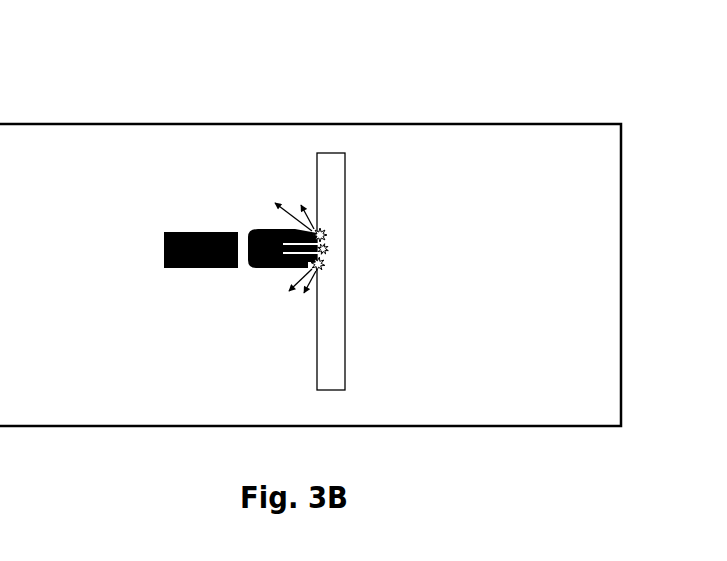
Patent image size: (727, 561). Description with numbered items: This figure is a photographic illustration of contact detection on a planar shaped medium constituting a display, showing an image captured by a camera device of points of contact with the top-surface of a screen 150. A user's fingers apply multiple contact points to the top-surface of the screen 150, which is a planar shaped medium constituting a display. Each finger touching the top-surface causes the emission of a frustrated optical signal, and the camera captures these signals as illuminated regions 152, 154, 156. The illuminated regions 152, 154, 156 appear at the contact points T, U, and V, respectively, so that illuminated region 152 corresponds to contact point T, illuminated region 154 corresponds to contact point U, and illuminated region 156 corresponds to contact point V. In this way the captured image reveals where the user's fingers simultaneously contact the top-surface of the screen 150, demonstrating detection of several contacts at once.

The screen 150 is at (331, 151).
The illuminated region 152 is at (316, 231).
The illuminated region 154 is at (335, 249).
The illuminated region 156 is at (321, 271).
The contact point T is at (331, 234).
The contact point U is at (334, 249).
The contact point V is at (332, 264).